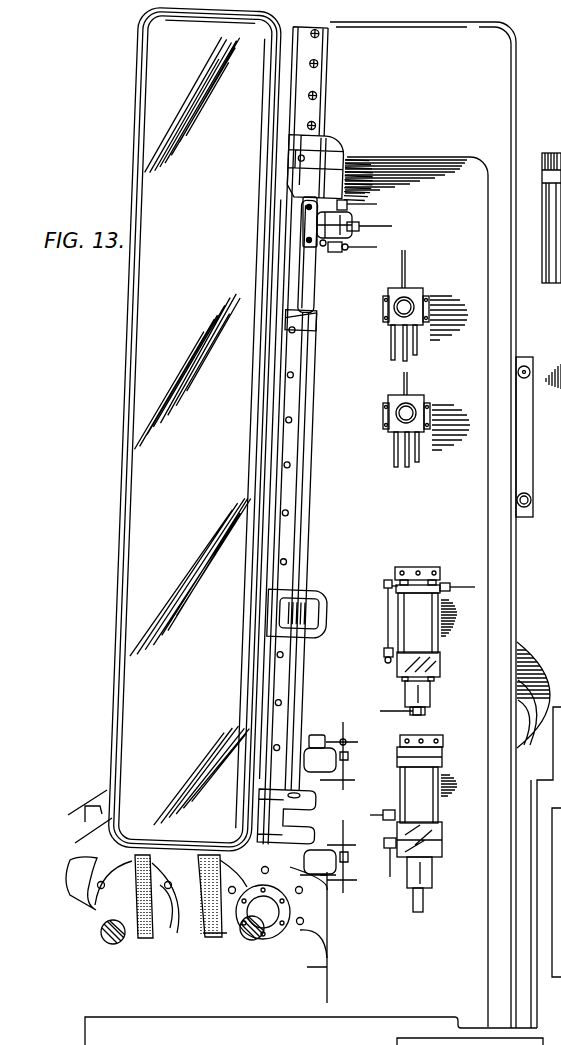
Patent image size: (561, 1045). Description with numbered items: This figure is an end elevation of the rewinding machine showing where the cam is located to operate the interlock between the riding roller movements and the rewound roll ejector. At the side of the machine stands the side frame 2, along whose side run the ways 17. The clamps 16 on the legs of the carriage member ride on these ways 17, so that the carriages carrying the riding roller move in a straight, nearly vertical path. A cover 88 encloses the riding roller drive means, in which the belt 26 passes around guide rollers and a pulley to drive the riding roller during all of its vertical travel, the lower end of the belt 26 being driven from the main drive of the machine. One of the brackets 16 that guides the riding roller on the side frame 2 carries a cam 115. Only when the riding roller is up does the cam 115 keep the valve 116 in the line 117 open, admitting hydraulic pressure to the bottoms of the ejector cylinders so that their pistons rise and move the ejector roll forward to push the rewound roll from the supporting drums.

The side frame 2 is at (323, 533).
The cover 88 is at (195, 429).
The clamp 16 is at (298, 283).
The way 17 is at (285, 353).
The cam 115 is at (305, 227).
The valve 116 is at (345, 236).
The line 117 is at (370, 211).
The belt 26 is at (204, 933).